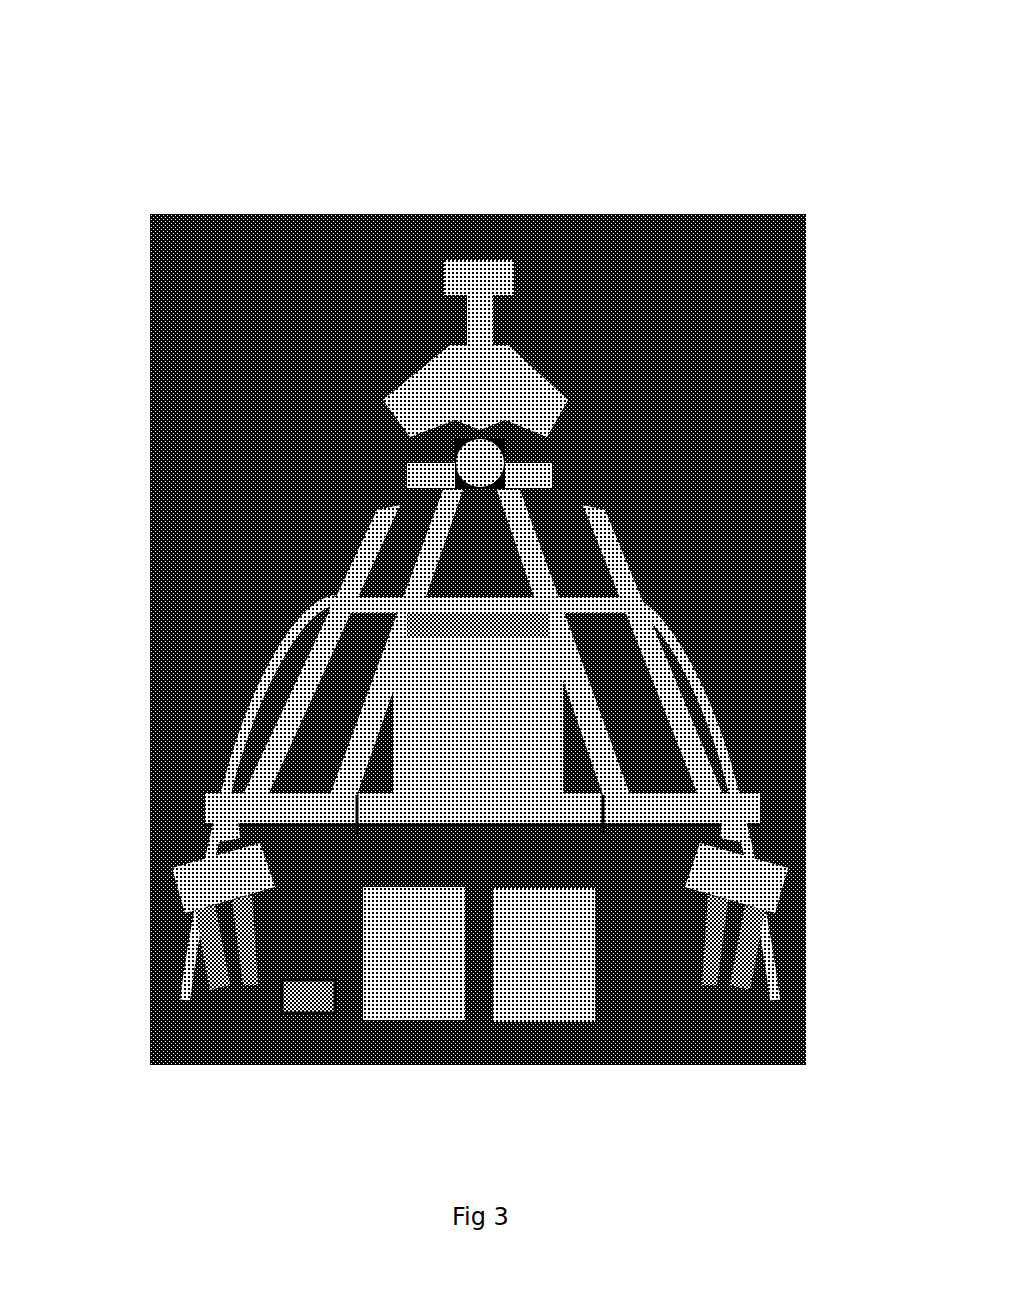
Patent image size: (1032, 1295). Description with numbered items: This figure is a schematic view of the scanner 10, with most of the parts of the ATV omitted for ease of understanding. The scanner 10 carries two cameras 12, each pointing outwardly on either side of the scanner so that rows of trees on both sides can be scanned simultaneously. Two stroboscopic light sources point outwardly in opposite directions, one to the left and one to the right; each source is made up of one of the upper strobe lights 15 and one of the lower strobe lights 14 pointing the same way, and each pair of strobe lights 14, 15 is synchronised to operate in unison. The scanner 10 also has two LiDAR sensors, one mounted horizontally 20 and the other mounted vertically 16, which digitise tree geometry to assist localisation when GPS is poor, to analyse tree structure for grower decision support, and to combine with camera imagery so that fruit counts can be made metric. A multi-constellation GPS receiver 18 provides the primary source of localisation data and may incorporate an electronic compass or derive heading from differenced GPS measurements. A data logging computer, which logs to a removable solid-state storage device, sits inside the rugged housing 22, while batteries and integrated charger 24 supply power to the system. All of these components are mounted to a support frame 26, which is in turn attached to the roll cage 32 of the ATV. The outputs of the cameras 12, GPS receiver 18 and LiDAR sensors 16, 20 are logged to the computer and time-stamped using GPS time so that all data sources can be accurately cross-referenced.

The scanner 10 is at (587, 72).
The cameras 12 is at (150, 562).
The lower strobe lights 14 is at (150, 852).
The upper strobe lights 15 is at (150, 283).
The vertically mounted LiDAR sensor 16 is at (150, 480).
The multi-constellation GPS receiver 18 is at (315, 214).
The horizontally mounted LiDAR sensor 20 is at (447, 214).
The rugged housing 22 is at (806, 650).
The batteries and integrated charger 24 is at (530, 975).
The support frame 26 is at (806, 728).
The roll cage 32 is at (806, 480).